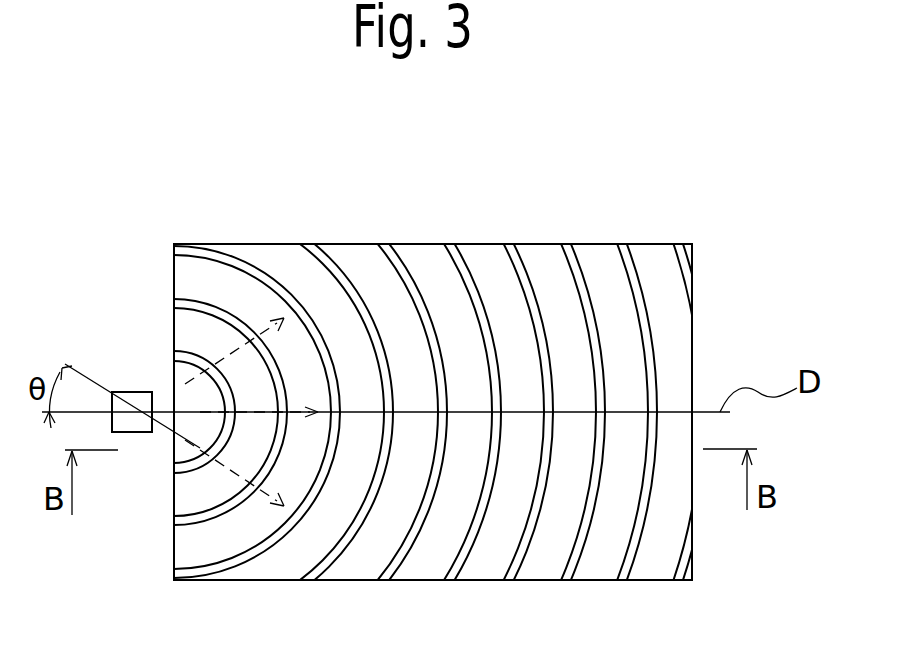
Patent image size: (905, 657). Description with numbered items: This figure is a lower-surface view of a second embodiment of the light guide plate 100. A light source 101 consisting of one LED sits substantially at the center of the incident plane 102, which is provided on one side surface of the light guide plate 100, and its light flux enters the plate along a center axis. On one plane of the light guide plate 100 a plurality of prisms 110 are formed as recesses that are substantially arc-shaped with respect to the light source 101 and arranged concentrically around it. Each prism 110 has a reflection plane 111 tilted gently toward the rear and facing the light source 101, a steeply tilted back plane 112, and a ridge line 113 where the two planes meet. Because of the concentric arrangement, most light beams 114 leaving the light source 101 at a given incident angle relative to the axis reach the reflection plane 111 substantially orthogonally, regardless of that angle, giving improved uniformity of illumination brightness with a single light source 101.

The light guide plate 100 is at (718, 226).
The light source 101 is at (130, 392).
The incident plane 102 is at (173, 560).
The prisms 110 is at (673, 352).
The reflection plane 111 is at (416, 258).
The back plane 112 is at (515, 262).
The ridge line 113 is at (625, 260).
The light beams 114 is at (230, 355).